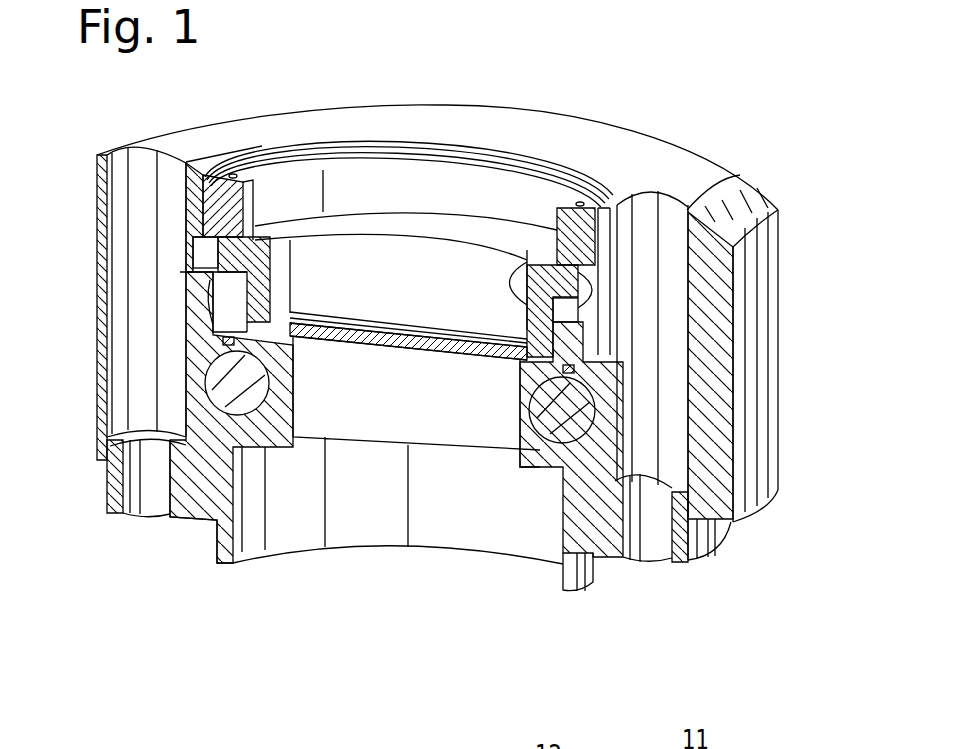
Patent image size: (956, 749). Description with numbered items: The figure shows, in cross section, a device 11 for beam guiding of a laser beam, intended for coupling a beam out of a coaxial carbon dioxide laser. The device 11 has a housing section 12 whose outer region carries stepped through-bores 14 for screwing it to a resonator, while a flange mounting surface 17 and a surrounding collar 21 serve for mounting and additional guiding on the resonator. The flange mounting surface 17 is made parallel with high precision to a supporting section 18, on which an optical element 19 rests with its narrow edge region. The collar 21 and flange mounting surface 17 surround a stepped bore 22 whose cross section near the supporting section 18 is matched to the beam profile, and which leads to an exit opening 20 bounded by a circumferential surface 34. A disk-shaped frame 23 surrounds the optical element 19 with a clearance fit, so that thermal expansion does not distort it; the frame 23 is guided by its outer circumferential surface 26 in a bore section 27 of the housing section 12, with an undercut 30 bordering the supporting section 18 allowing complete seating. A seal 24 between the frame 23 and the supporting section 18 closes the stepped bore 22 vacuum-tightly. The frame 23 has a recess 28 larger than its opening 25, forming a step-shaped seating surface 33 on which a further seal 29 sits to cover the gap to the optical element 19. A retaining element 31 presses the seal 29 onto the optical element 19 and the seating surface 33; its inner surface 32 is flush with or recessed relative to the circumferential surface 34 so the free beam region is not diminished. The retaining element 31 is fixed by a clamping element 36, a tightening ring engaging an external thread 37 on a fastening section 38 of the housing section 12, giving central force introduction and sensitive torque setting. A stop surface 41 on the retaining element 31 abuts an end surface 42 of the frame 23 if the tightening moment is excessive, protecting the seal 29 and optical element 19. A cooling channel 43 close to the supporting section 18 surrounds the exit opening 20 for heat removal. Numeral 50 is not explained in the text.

The device 11 is at (655, 110).
The housing section 12 is at (728, 500).
The stepped through-bores 14 is at (686, 462).
The flange mounting surface 17 is at (608, 560).
The supporting section 18 is at (528, 372).
The optical element 19 is at (360, 343).
The exit opening 20 is at (318, 414).
The surrounding collar 21 is at (566, 594).
The stepped bore 22 is at (361, 555).
The frame 23 is at (215, 280).
The seal 24 is at (215, 350).
The opening 25 is at (366, 186).
The outer circumferential surface 26 is at (598, 300).
The bore section 27 is at (598, 290).
The recess 28 is at (236, 342).
The seal 29 is at (213, 305).
The undercut 30 is at (575, 370).
The retaining element 31 is at (250, 257).
The inner surface 32 is at (418, 270).
The step-shaped seating surface 33 is at (515, 374).
The circumferential surface 34 is at (295, 425).
The clamping element 36 is at (222, 207).
The external thread 37 is at (596, 207).
The fastening section 38 is at (600, 224).
The stop surface 41 is at (506, 290).
The end surface 42 is at (738, 184).
The cooling channel 43 is at (545, 445).
The seal gap 50 is at (210, 273).